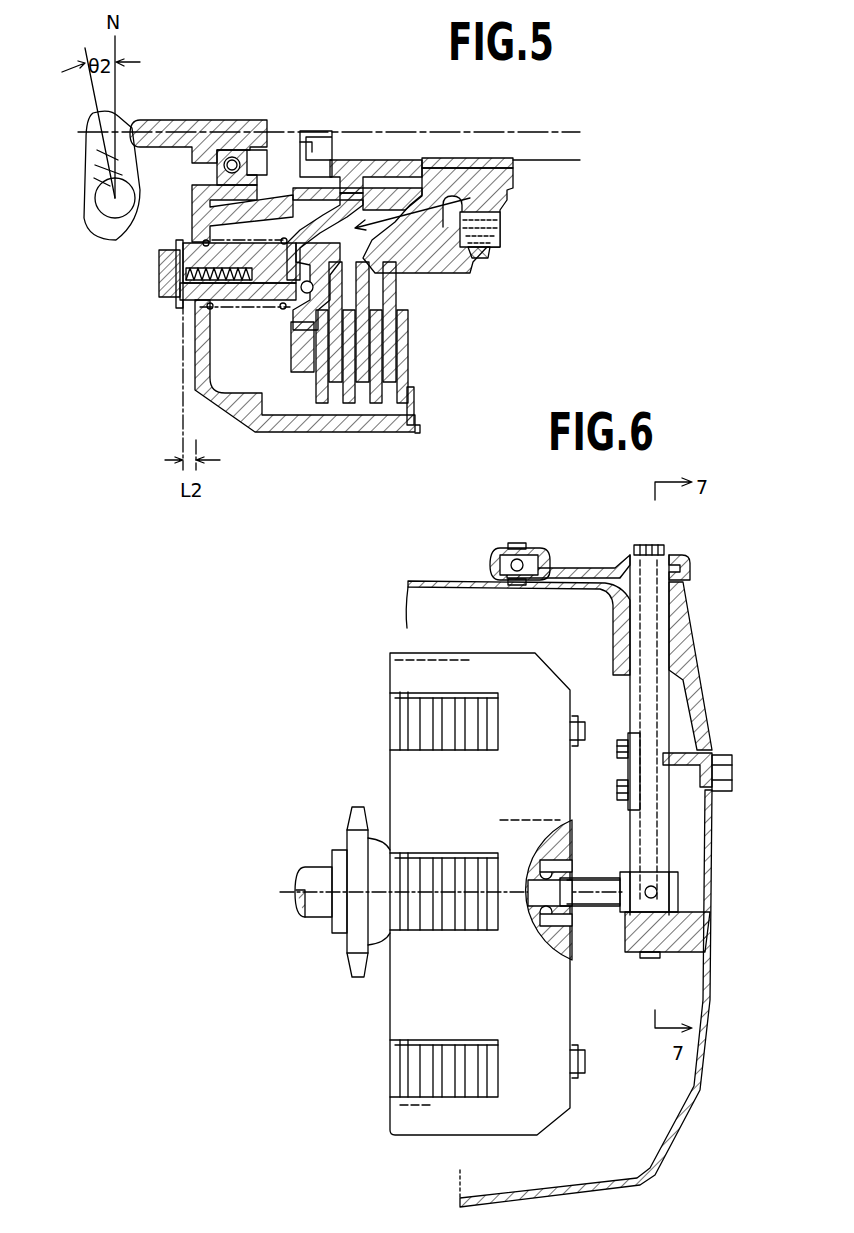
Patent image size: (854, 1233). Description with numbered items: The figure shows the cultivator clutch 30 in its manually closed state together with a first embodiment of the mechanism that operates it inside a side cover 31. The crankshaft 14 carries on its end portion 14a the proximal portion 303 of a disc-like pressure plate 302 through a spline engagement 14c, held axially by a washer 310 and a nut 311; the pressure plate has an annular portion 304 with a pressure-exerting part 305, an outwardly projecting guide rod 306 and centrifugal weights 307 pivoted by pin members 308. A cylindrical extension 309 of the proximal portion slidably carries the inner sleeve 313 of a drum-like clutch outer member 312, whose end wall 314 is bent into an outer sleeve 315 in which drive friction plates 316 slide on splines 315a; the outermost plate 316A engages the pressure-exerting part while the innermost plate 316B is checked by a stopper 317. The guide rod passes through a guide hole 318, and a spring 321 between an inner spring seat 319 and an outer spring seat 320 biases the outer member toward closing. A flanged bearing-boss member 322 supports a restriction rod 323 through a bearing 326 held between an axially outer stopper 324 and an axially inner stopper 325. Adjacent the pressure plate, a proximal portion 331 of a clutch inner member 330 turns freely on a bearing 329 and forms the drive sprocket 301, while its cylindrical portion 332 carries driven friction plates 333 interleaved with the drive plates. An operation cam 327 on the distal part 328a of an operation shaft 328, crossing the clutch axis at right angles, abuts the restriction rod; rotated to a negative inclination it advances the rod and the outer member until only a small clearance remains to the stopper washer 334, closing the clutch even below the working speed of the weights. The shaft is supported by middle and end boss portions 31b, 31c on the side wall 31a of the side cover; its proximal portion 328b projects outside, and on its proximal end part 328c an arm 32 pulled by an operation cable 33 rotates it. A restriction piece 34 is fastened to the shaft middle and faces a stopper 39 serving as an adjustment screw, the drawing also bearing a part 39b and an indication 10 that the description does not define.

In FIG. 6, the transmission assembly 10 is at (654, 1050).
In FIG. 5, the crankshaft 14 is at (553, 148).
In FIG. 6, the crankshaft 14 is at (312, 916).
In FIG. 5, the end portion 14a is at (380, 145).
In FIG. 6, the end portion 14a is at (318, 866).
In FIG. 5, the spline engagement 14c is at (430, 160).
In FIG. 5, the clutch 30 is at (286, 448).
In FIG. 6, the clutch 30 is at (402, 800).
In FIG. 6, the side cover 31 is at (723, 1004).
In FIG. 6, the side wall 31a is at (710, 1050).
In FIG. 6, the middle boss portion 31b is at (690, 945).
In FIG. 6, the end boss portion 31c is at (685, 642).
In FIG. 6, the arm 32 is at (576, 558).
In FIG. 6, the operation cable 33 is at (522, 555).
In FIG. 6, the restriction piece 34 is at (627, 770).
In FIG. 6, the stopper 39 is at (705, 752).
In FIG. 6, the nut 39b is at (722, 790).
In FIG. 5, the drive sprocket 301 is at (488, 256).
In FIG. 6, the drive sprocket 301 is at (358, 978).
In FIG. 5, the pressure plate 302 is at (455, 215).
In FIG. 5, the proximal portion 303 is at (400, 160).
In FIG. 5, the annular portion 304 is at (360, 298).
In FIG. 5, the pressure-exerting part 305 is at (300, 372).
In FIG. 5, the guide rod 306 is at (178, 305).
In FIG. 5, the centrifugal weights 307 is at (205, 386).
In FIG. 5, the pin members 308 is at (292, 322).
In FIG. 5, the cylindrical extension 309 is at (352, 140).
In FIG. 5, the washer 310 is at (330, 140).
In FIG. 5, the nut 311 is at (305, 138).
In FIG. 5, the clutch outer member 312 is at (220, 460).
In FIG. 6, the clutch outer member 312 is at (550, 1115).
In FIG. 5, the inner sleeve 313 is at (300, 187).
In FIG. 5, the end wall 314 is at (200, 372).
In FIG. 5, the outer sleeve 315 is at (395, 430).
In FIG. 5, the splines 315a is at (420, 432).
In FIG. 5, the drive friction plates 316 is at (360, 392).
In FIG. 5, the outermost drive friction plate 316A is at (322, 405).
In FIG. 5, the innermost drive friction plate 316B is at (400, 355).
In FIG. 5, the stopper 317 is at (415, 410).
In FIG. 5, the guide hole 318 is at (205, 225).
In FIG. 5, the inner spring seat 319 is at (400, 175).
In FIG. 5, the outer spring seat 320 is at (205, 305).
In FIG. 5, the spring 321 is at (215, 200).
In FIG. 5, the flanged bearing-boss member 322 is at (228, 180).
In FIG. 5, the restriction rod 323 is at (145, 120).
In FIG. 6, the restriction rod 323 is at (600, 906).
In FIG. 5, the axially outer stopper 324 is at (192, 120).
In FIG. 5, the axially inner stopper 325 is at (250, 150).
In FIG. 5, the bearing 326 is at (222, 150).
In FIG. 5, the operation cam 327 is at (200, 246).
In FIG. 6, the operation cam 327 is at (678, 888).
In FIG. 5, the operation shaft 328 is at (103, 212).
In FIG. 6, the operation shaft 328 is at (665, 838).
In FIG. 6, the distal part 328a is at (668, 931).
In FIG. 6, the proximal portion 328b is at (660, 658).
In FIG. 6, the proximal end part 328c is at (655, 560).
In FIG. 5, the bearing 329 is at (505, 158).
In FIG. 5, the clutch inner member 330 is at (441, 266).
In FIG. 5, the proximal portion 331 is at (505, 183).
In FIG. 5, the cylindrical portion 332 is at (500, 236).
In FIG. 5, the driven friction plates 333 is at (385, 345).
In FIG. 5, the stopper washer 334 is at (175, 280).